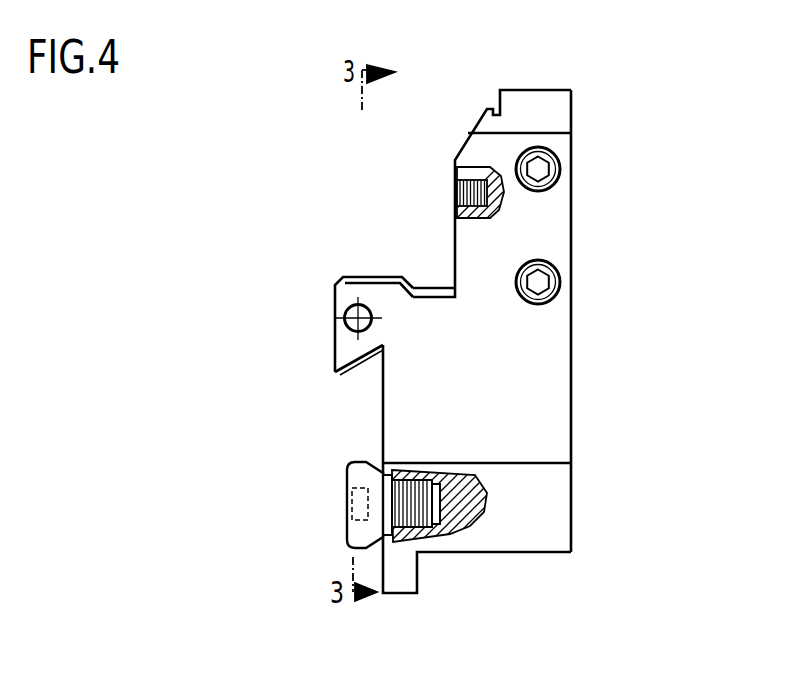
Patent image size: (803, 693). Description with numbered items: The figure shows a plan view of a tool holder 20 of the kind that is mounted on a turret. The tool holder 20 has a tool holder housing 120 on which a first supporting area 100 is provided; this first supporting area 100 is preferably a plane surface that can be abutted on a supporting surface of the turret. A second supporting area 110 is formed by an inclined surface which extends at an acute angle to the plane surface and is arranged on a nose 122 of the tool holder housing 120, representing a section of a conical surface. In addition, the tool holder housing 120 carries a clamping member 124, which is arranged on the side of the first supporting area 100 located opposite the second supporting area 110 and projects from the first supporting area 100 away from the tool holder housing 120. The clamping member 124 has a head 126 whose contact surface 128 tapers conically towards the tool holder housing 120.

The tool holder 20 is at (578, 209).
The first supporting area 100 is at (383, 415).
The second supporting area 110 is at (358, 370).
The tool holder housing 120 is at (460, 372).
The nose 122 is at (340, 340).
The clamping member 124 is at (340, 509).
The head 126 is at (347, 463).
The contact surface 128 is at (368, 552).